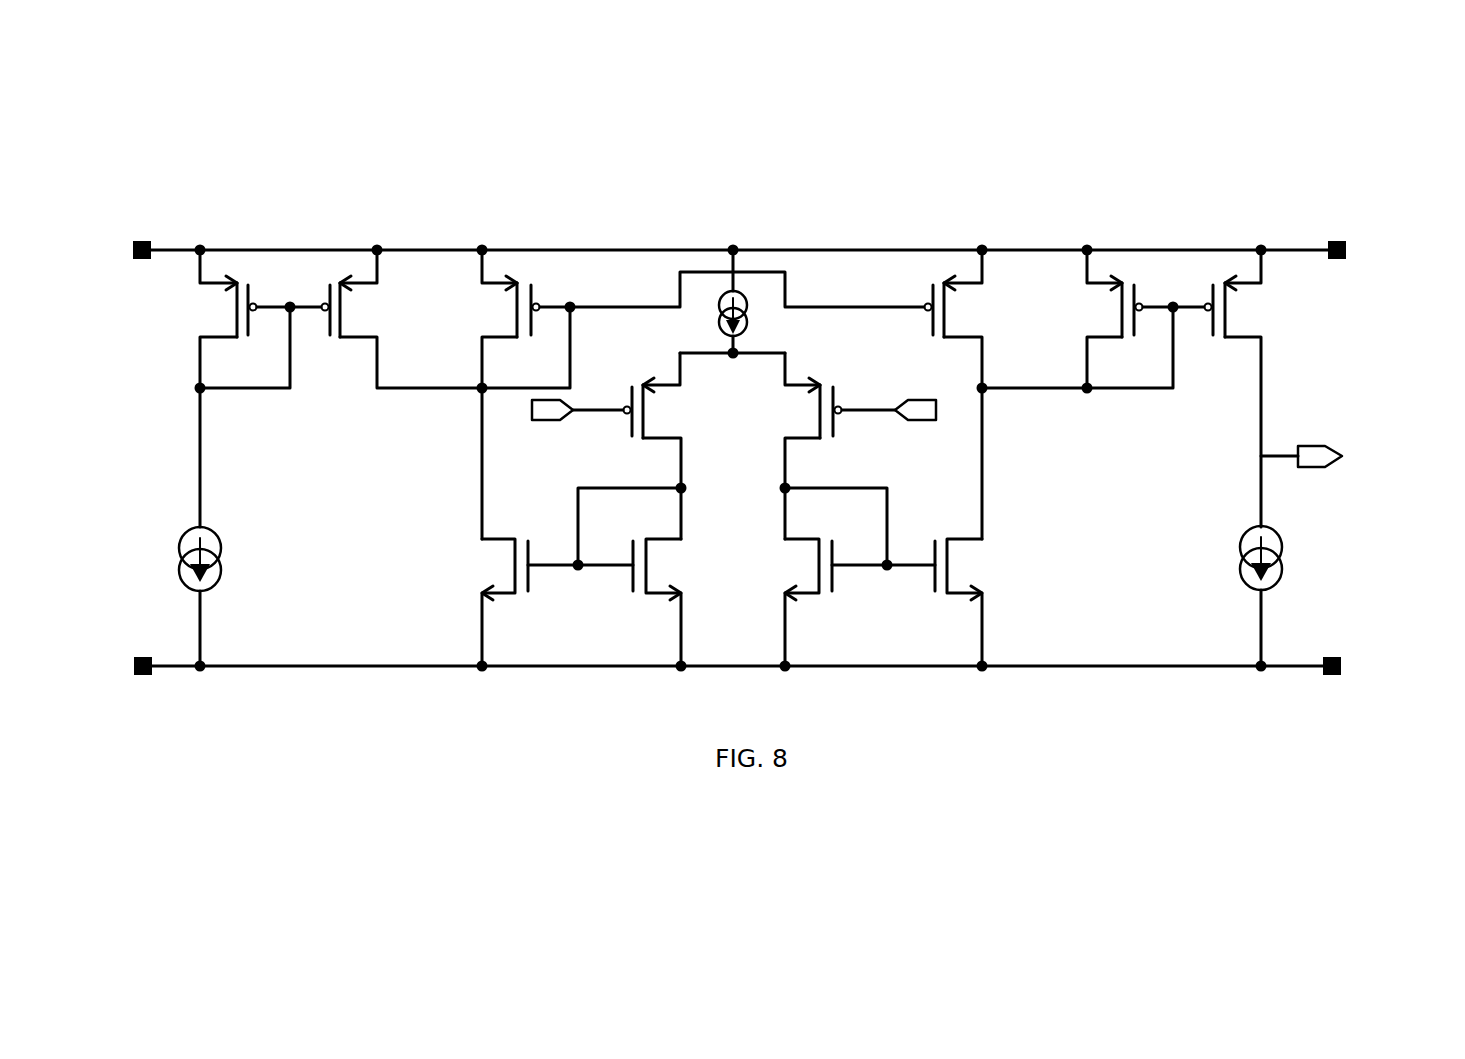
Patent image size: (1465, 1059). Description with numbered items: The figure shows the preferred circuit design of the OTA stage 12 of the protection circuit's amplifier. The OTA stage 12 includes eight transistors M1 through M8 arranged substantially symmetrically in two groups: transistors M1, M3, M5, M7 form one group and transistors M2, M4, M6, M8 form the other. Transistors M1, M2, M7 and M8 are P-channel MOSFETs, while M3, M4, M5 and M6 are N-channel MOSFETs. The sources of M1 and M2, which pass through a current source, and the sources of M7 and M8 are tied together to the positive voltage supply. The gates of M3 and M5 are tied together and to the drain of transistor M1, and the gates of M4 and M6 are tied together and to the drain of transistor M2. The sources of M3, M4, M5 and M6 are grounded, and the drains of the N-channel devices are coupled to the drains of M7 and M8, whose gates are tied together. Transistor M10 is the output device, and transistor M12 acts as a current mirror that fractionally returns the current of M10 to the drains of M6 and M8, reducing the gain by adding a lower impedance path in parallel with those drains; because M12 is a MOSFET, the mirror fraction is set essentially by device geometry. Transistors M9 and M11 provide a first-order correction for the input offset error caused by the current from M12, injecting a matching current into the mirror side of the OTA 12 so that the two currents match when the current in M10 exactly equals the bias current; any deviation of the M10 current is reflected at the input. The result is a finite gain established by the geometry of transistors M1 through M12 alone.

The OTA stage 12 is at (717, 191).
The P-channel MOSFET M1 is at (622, 446).
The P-channel MOSFET M2 is at (850, 446).
The N-channel MOSFET M3 is at (640, 577).
The N-channel MOSFET M4 is at (823, 577).
The N-channel MOSFET M5 is at (516, 602).
The N-channel MOSFET M6 is at (951, 602).
The P-channel MOSFET M7 is at (689, 394).
The P-channel MOSFET M8 is at (967, 394).
The offset-correction transistor M9 is at (227, 319).
The output transistor M10 is at (1235, 388).
The offset-correction transistor M11 is at (386, 319).
The current-mirror transistor M12 is at (1077, 319).